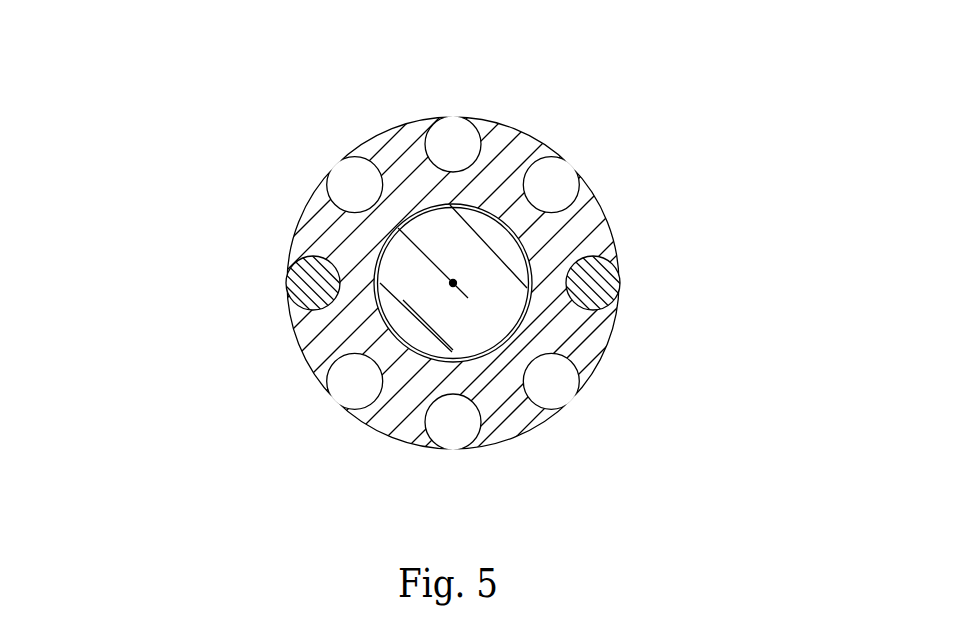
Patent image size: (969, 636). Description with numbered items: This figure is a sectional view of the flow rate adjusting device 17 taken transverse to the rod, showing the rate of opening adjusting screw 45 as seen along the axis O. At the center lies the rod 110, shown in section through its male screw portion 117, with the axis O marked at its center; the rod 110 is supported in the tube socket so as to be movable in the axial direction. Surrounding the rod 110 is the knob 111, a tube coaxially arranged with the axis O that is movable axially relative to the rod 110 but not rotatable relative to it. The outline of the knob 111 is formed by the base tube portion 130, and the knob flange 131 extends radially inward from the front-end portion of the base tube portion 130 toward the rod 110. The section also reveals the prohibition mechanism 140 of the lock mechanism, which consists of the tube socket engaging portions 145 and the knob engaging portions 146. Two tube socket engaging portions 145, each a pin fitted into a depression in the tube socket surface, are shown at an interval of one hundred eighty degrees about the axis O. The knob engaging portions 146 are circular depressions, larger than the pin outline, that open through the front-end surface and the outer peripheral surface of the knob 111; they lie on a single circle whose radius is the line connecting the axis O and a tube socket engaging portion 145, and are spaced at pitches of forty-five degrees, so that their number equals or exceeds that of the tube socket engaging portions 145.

The flow rate adjusting device 17 is at (598, 93).
The rate of opening adjusting screw 45 is at (662, 158).
The prohibition mechanism 140 is at (277, 296).
The knob 111 is at (613, 218).
The knob engaging portion 146 is at (372, 165).
The tube socket engaging portion 145 is at (300, 283).
The male screw portion 117 is at (528, 244).
The base tube portion 130 is at (597, 342).
The knob flange 131 is at (547, 340).
The rod 110 is at (478, 208).
The axis O is at (455, 287).